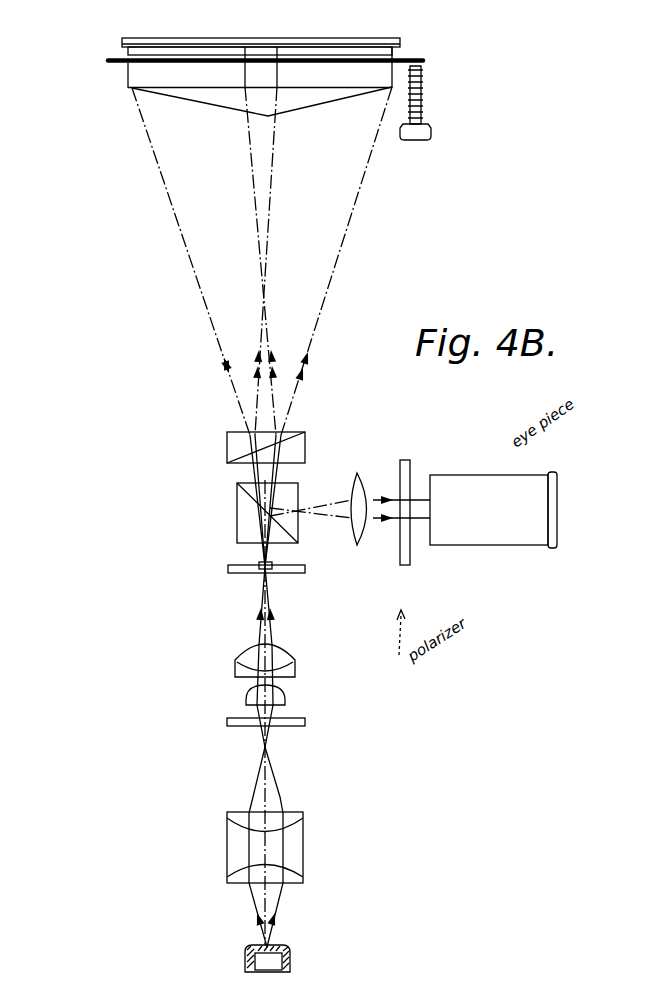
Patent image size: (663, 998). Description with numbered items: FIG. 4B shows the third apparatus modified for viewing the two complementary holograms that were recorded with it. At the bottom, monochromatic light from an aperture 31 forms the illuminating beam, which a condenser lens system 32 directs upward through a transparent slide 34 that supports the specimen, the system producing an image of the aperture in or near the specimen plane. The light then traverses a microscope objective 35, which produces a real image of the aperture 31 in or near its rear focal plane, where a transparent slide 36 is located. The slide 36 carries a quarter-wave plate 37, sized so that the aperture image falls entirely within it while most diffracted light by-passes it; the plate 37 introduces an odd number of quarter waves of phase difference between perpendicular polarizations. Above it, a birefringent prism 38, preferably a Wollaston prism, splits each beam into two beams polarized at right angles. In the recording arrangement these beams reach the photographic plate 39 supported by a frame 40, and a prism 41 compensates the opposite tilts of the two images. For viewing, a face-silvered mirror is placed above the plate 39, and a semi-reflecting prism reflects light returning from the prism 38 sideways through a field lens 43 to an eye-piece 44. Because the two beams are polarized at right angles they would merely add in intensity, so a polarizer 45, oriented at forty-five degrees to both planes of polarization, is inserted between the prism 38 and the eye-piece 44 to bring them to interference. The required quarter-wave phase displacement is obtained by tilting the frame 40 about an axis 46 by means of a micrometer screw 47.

The aperture 31 is at (272, 946).
The condenser lens system 32 is at (303, 847).
The transparent slide 34 is at (227, 722).
The microscope objective 35 is at (285, 700).
The transparent slide 36 is at (228, 568).
The quarter-wave plate 37 is at (258, 573).
The birefringent prism 38 is at (227, 446).
The photographic plate 39 is at (128, 50).
The frame 40 is at (120, 64).
The prism 41 is at (188, 100).
The field lens 43 is at (358, 481).
The eye-piece 44 is at (485, 485).
The polarizer 45 is at (405, 567).
The axis 46 is at (108, 61).
The micrometer screw 47 is at (424, 82).